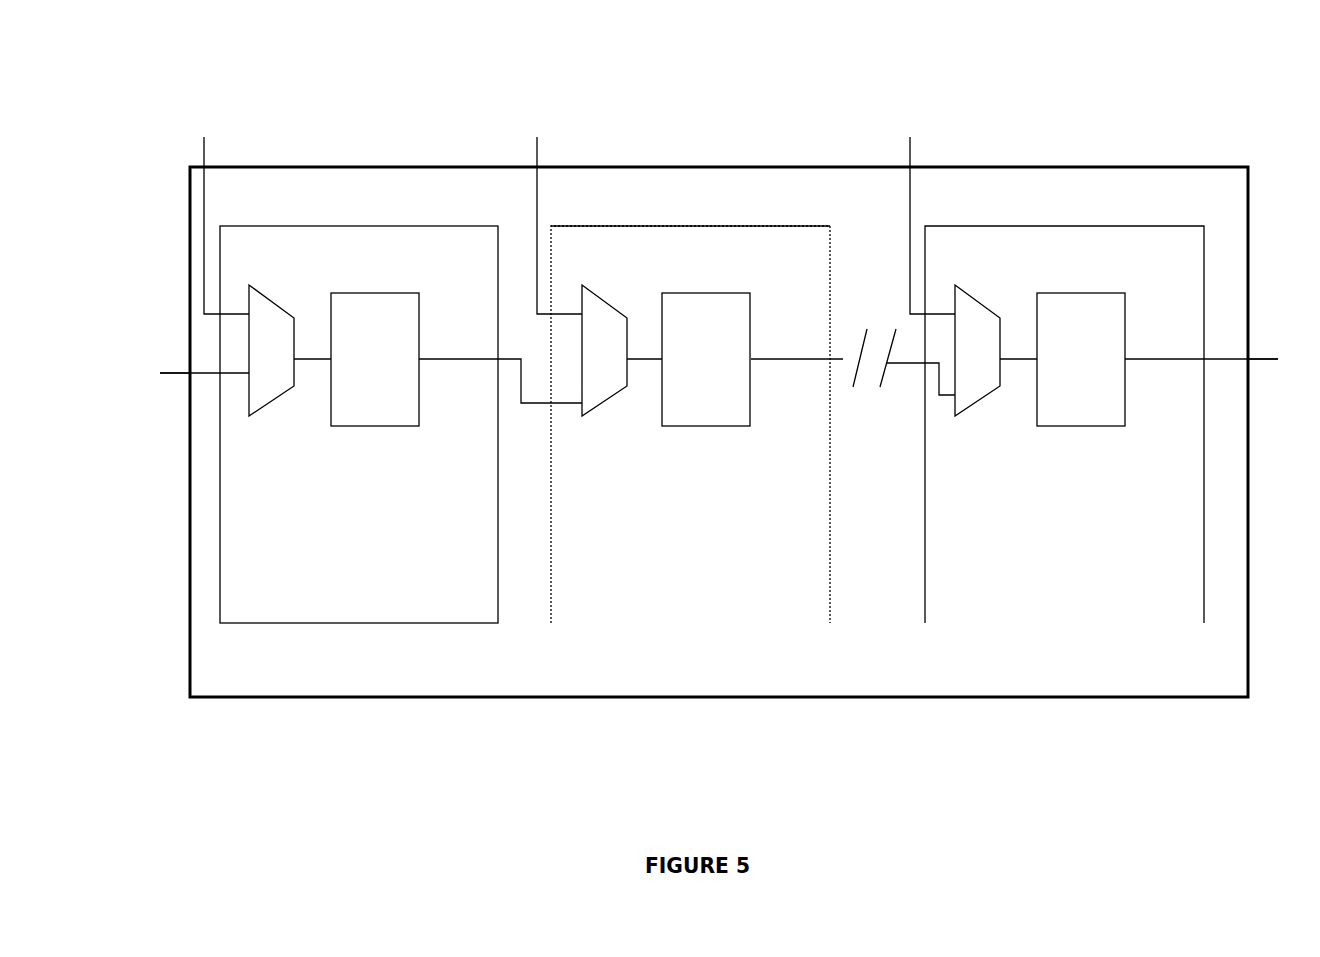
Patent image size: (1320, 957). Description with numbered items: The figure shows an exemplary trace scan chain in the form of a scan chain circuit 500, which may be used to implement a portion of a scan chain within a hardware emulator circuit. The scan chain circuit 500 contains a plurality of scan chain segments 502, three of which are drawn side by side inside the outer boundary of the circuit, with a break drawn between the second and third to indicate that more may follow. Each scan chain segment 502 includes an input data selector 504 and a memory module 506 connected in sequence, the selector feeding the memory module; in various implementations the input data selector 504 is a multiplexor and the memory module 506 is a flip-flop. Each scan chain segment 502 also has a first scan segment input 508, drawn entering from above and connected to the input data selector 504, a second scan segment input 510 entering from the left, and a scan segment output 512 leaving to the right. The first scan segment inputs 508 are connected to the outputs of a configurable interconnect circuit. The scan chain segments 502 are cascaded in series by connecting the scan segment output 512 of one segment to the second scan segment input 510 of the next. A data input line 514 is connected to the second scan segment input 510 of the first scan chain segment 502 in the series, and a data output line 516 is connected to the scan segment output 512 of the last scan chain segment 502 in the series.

The scan chain circuit 500 is at (367, 138).
The scan chain segment 502 is at (382, 551).
The input data selector 504 is at (286, 368).
The memory module 506 is at (390, 368).
The first scan segment input 508 is at (204, 153).
The second scan segment input 510 is at (204, 373).
The scan segment output 512 is at (514, 360).
The data input line 514 is at (177, 373).
The data output line 516 is at (1263, 360).